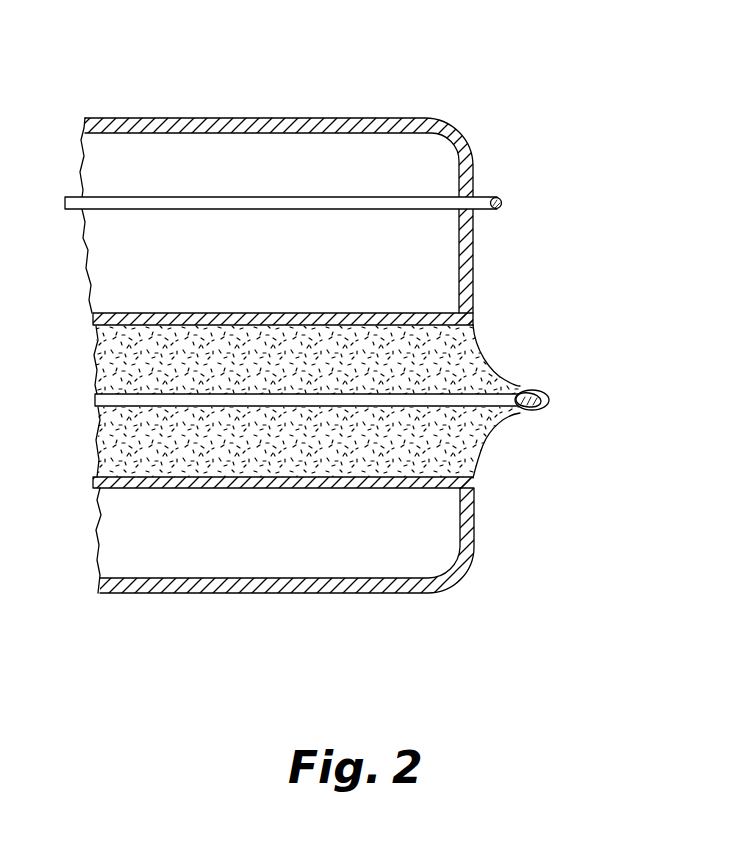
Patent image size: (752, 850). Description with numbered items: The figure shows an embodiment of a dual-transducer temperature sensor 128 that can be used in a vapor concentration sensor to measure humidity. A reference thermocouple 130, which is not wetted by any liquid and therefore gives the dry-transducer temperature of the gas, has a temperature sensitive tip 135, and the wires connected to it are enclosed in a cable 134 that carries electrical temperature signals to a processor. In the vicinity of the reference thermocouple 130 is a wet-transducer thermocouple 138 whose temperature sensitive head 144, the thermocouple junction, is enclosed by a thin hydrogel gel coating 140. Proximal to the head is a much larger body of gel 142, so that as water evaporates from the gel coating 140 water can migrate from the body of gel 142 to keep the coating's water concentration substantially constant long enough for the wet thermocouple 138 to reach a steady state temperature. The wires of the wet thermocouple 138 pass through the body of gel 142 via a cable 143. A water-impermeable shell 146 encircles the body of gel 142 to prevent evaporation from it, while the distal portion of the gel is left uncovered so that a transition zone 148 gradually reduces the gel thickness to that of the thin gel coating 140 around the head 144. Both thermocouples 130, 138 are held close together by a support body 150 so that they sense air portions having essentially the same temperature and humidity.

The dual-transducer temperature sensor 128 is at (527, 58).
The thermocouple 130 is at (503, 183).
The cable 134 is at (273, 211).
The tip 135 is at (502, 205).
The thermocouple 138 is at (530, 409).
The gel coating 140 is at (548, 415).
The body of gel 142 is at (362, 360).
The cable 143 is at (203, 412).
The temperature sensitive head 144 is at (547, 390).
The water-impermeable shell 146 is at (139, 313).
The transition zone 148 is at (492, 362).
The support body 150 is at (367, 593).